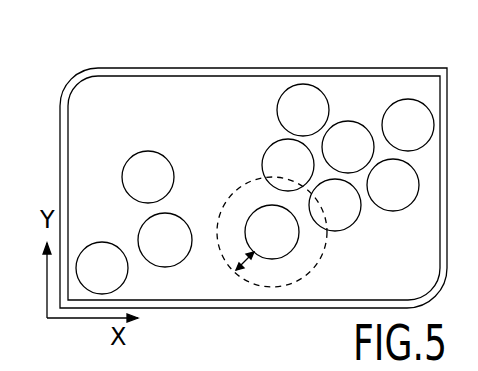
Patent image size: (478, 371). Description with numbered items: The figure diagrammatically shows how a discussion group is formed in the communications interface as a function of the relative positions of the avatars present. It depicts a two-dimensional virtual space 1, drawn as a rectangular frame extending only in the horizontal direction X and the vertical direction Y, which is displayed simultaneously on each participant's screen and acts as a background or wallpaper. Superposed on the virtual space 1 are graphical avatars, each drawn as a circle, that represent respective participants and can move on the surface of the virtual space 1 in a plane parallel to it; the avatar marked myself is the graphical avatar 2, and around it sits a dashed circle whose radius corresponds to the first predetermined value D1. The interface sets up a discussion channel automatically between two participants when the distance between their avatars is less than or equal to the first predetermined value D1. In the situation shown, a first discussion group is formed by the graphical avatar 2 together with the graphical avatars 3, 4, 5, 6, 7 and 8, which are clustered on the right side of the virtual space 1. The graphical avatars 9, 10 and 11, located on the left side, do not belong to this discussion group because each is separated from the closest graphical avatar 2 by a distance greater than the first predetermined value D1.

The virtual space 1 is at (162, 110).
The graphical avatar 2 is at (272, 247).
The first predetermined value D1 is at (240, 262).
The graphical avatar 3 is at (275, 158).
The graphical avatar 4 is at (297, 95).
The graphical avatar 5 is at (345, 135).
The graphical avatar 6 is at (407, 115).
The graphical avatar 7 is at (408, 195).
The graphical avatar 8 is at (338, 217).
The graphical avatar 9 is at (142, 170).
The graphical avatar 10 is at (165, 255).
The graphical avatar 11 is at (100, 258).